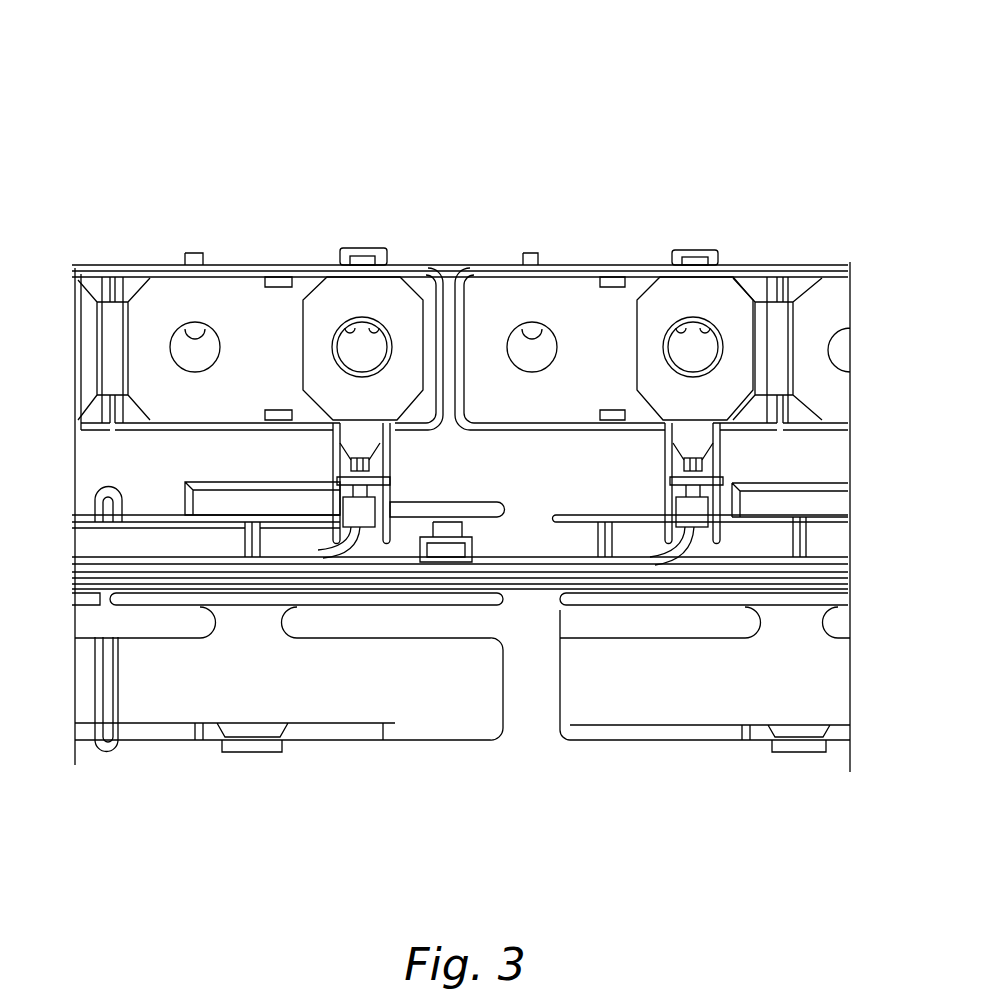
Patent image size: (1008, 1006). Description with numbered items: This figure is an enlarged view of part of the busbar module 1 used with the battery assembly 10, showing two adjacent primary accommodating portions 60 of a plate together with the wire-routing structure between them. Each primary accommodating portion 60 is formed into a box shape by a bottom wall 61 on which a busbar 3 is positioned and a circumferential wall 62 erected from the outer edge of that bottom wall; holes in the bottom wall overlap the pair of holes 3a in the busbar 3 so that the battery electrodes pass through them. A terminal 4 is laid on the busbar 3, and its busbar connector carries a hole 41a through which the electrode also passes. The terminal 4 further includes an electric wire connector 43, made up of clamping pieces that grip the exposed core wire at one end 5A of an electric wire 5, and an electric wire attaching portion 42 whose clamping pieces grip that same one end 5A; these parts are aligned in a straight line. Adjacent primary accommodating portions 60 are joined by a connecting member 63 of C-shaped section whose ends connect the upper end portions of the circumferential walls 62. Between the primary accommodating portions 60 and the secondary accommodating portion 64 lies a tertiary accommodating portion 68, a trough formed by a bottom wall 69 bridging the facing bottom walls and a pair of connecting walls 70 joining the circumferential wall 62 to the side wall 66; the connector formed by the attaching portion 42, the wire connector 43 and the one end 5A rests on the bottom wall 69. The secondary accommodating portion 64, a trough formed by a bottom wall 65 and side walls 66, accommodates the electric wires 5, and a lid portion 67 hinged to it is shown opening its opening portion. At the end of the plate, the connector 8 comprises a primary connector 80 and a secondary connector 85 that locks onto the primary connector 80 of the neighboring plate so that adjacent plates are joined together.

The battery module 10 is at (806, 89).
The battery wiring module 1 is at (758, 186).
The busbar 3 is at (259, 300).
The hole 3a is at (200, 333).
The terminal 4 is at (363, 300).
The hole 41a is at (380, 330).
The electric wire 5 is at (190, 560).
The one end 5A is at (357, 548).
The connector 8 is at (433, 616).
The primary accommodating portion 60 is at (186, 170).
The bottom wall 61 is at (131, 277).
The circumferential wall 62 is at (164, 277).
The connecting member 63 is at (113, 277).
The secondary accommodating portion 64 is at (134, 440).
The bottom wall 65 is at (178, 543).
The side wall 66 is at (150, 517).
The lid portion 67 is at (250, 690).
The tertiary accommodating portion 68 is at (486, 443).
The bottom wall 69 is at (378, 465).
The connecting wall 70 is at (390, 485).
The electric wire attaching portion 42 is at (345, 515).
The electric wire connector 43 is at (349, 473).
The primary connector 80 is at (468, 616).
The secondary connector 85 is at (490, 547).